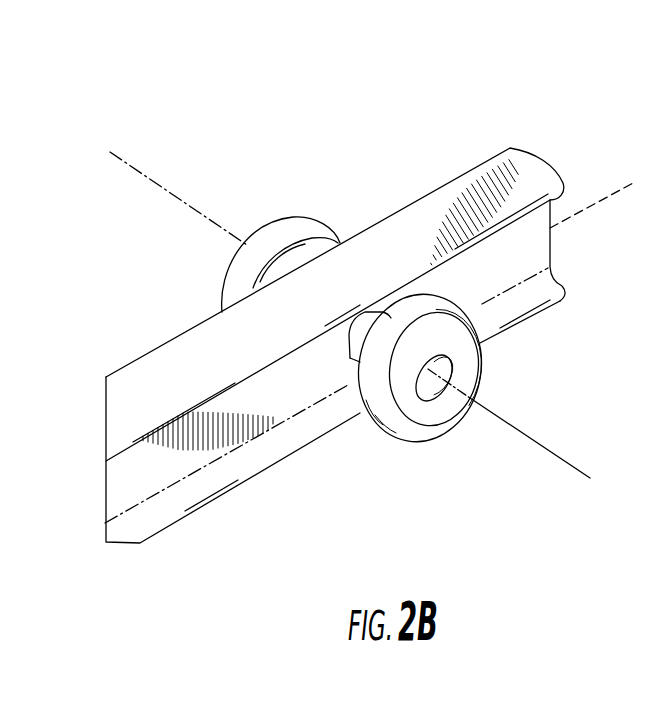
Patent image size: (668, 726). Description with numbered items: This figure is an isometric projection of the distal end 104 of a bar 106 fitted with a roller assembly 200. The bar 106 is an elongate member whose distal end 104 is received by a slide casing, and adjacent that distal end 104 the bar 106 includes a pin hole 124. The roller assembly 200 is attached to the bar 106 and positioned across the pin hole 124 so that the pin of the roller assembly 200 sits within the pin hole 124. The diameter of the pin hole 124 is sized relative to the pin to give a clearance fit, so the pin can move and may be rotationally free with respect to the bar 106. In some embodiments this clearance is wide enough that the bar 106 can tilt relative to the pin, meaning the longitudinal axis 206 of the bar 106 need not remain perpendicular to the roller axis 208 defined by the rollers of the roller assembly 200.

The distal end 104 is at (348, 323).
The bar 106 is at (153, 381).
The pin hole 124 is at (340, 350).
The roller assembly 200 is at (275, 210).
The longitudinal axis 206 is at (593, 207).
The roller axis 208 is at (507, 424).